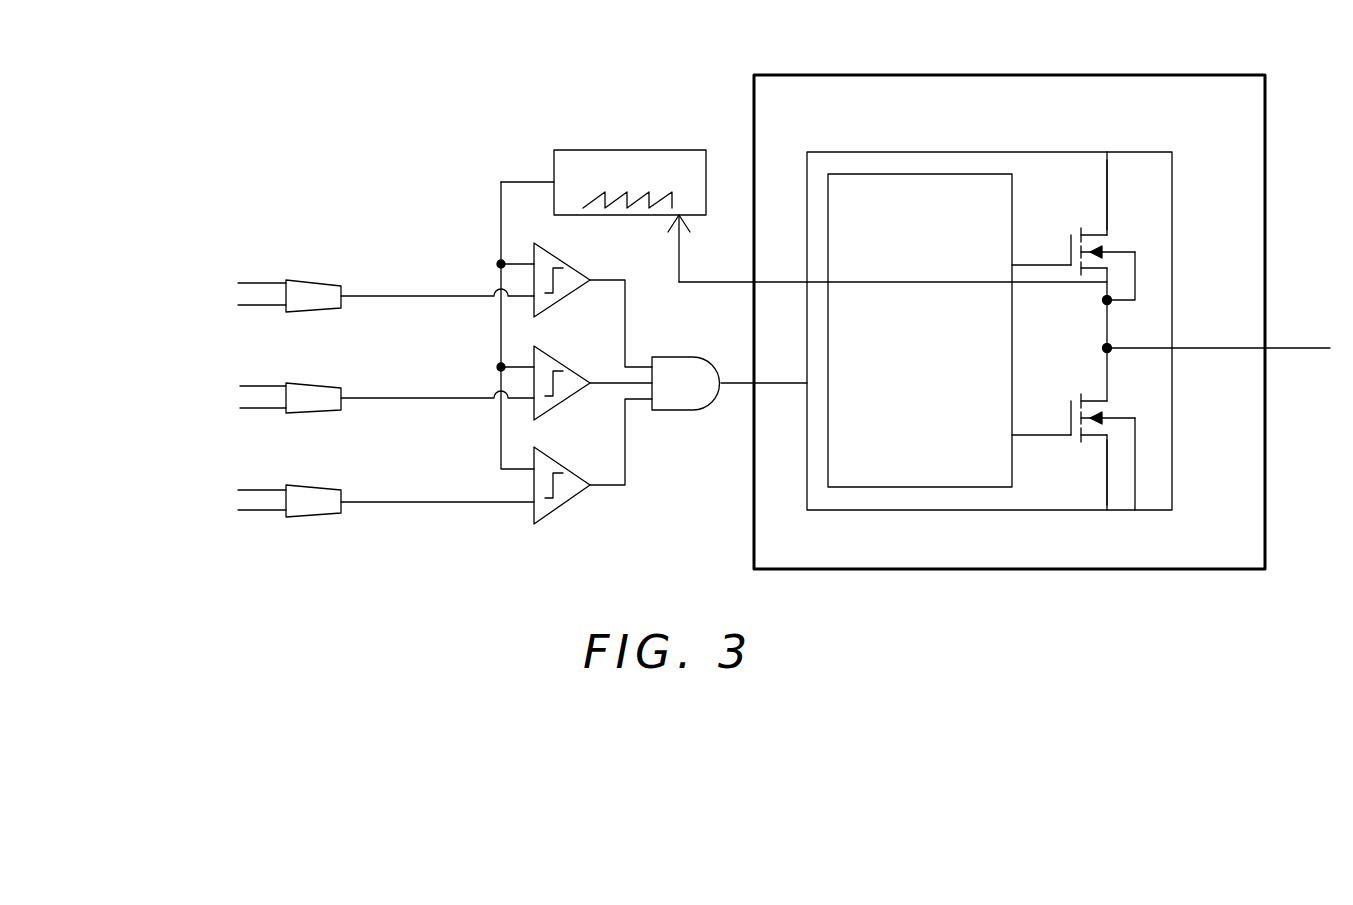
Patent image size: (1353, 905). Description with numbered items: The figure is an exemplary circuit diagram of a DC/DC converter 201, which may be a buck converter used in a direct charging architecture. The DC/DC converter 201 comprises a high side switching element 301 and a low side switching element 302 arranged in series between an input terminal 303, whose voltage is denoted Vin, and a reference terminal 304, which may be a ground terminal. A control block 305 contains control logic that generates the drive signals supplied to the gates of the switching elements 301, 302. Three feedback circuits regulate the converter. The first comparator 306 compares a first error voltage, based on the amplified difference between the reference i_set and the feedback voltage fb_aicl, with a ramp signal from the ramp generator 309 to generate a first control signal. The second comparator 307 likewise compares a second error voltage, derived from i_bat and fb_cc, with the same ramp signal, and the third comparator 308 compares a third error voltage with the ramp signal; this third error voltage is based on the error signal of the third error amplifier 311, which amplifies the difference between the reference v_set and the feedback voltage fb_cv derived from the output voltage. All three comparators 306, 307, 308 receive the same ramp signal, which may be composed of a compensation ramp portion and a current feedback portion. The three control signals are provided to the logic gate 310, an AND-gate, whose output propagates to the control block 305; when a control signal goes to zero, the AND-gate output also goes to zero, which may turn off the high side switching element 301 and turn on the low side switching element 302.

The DC/DC converter 201 is at (285, 118).
The high side switching element 301 is at (1071, 228).
The low side switching element 302 is at (1071, 395).
The input terminal 303 is at (1107, 201).
The reference terminal 304 is at (1107, 478).
The control block 305 is at (928, 487).
The first comparator 306 is at (548, 302).
The second comparator 307 is at (548, 405).
The third comparator 308 is at (548, 507).
The ramp generator 309 is at (641, 150).
The logic gate 310 is at (295, 413).
The third error amplifier 311 is at (295, 517).